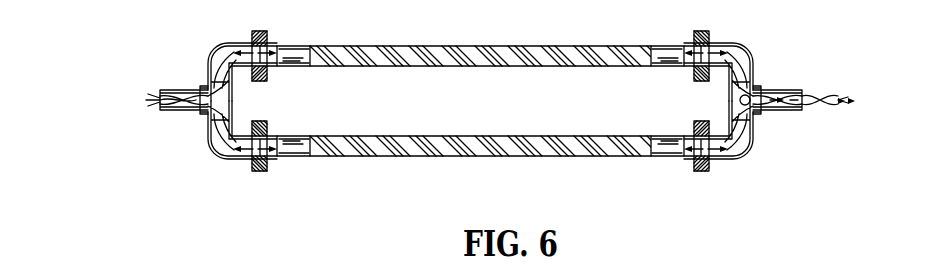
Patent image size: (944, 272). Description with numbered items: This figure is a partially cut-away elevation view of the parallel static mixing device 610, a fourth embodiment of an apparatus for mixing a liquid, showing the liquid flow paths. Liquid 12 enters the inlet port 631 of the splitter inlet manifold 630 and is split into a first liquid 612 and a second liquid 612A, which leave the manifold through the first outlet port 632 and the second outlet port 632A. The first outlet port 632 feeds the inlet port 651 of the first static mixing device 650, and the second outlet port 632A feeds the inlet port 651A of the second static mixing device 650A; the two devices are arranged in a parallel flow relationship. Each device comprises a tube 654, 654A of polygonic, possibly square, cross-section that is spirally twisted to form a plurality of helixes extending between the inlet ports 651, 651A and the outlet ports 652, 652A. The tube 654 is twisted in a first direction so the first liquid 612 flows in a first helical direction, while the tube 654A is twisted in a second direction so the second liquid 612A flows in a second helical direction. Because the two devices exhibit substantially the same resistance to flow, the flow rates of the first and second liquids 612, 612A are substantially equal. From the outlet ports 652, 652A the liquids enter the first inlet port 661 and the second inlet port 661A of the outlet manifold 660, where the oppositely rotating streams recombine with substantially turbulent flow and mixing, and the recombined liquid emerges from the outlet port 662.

The parallel static mixing device 610 is at (85, 51).
The liquid 12 is at (136, 102).
The first liquid 612 is at (217, 155).
The second liquid 612A is at (207, 86).
The splitter inlet manifold 630 is at (207, 89).
The inlet port 631 is at (193, 111).
The first outlet port 632 is at (245, 160).
The second outlet port 632A is at (245, 44).
The inlet port 651 is at (280, 157).
The inlet port 651A is at (285, 49).
The first static mixing device 650 is at (473, 156).
The second static mixing device 650A is at (477, 48).
The tube 654 is at (418, 156).
The tube 654A is at (408, 48).
The outlet port 652 is at (682, 158).
The outlet port 652A is at (678, 46).
The first inlet port 661 is at (745, 158).
The second inlet port 661A is at (747, 45).
The outlet manifold 660 is at (757, 90).
The outlet port 662 is at (806, 85).